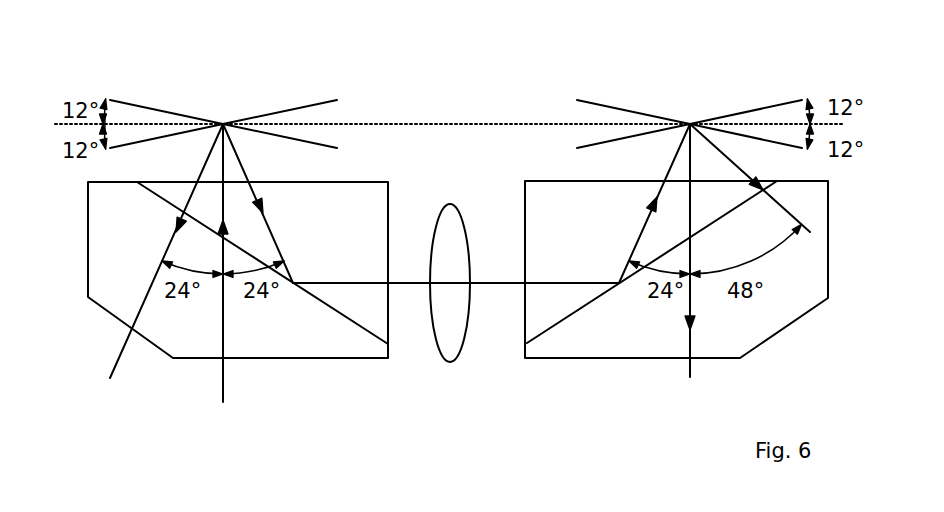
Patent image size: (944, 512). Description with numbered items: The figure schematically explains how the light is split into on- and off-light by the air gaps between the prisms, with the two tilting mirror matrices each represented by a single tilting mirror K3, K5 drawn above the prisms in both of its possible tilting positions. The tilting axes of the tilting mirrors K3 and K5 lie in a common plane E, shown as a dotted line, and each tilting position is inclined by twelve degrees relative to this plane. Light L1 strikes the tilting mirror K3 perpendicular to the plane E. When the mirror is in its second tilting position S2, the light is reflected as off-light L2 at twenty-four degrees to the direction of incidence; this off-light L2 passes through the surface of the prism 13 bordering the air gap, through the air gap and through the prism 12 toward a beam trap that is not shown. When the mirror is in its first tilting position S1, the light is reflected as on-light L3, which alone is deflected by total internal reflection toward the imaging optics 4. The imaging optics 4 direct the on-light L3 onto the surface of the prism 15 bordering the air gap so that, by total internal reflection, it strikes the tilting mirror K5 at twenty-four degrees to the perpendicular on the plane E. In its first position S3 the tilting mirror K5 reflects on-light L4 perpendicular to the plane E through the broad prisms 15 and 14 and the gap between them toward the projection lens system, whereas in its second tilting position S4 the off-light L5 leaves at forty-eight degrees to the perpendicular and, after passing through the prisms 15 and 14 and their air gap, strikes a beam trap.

The common plane E is at (443, 123).
The prism 12 is at (110, 285).
The prism 13 is at (382, 233).
The prism 14 is at (602, 338).
The prism 15 is at (533, 313).
The imaging optics 4 is at (433, 348).
The first tilting position S1 is at (143, 143).
The second tilting position S2 is at (130, 102).
The first position S3 is at (603, 145).
The second tilting position S4 is at (590, 100).
The tilting mirror K3 is at (337, 146).
The tilting mirror K5 is at (583, 133).
The light L1 is at (222, 378).
The off-light L2 is at (120, 343).
The on-light L3 is at (272, 215).
The on-light L4 is at (692, 368).
The off-light L5 is at (803, 237).